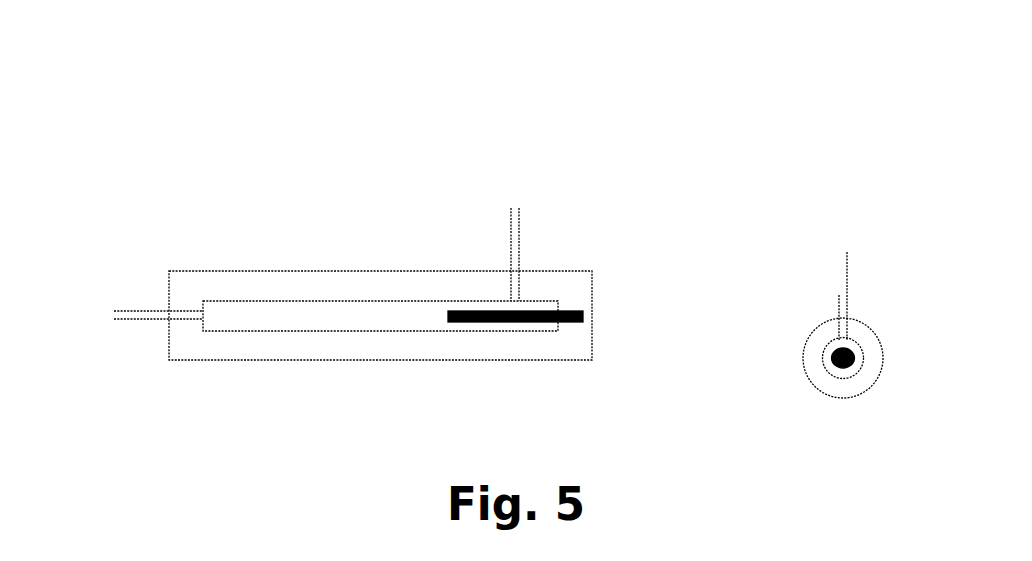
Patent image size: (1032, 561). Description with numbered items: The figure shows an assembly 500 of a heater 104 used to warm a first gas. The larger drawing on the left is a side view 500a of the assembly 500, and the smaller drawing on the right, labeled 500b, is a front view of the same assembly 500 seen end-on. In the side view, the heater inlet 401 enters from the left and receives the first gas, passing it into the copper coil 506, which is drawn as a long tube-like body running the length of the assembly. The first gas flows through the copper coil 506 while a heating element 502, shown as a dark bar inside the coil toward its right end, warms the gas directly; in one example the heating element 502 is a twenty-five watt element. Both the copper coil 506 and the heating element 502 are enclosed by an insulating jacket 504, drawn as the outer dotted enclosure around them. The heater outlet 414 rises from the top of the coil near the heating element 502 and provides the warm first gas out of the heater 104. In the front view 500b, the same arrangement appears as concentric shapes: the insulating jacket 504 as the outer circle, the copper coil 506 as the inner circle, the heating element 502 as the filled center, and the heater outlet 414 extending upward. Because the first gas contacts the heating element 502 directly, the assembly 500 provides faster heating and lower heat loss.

The assembly 500 is at (525, 61).
The side view of light source assembly 500a is at (289, 146).
The front view of assembly 500b is at (871, 207).
The heater 104 is at (462, 126).
The heater outlet 414 is at (510, 208).
The heater inlet 401 is at (105, 314).
The insulating jacket 504 is at (181, 362).
The copper coil 506 is at (244, 332).
The heating element 502 is at (527, 322).